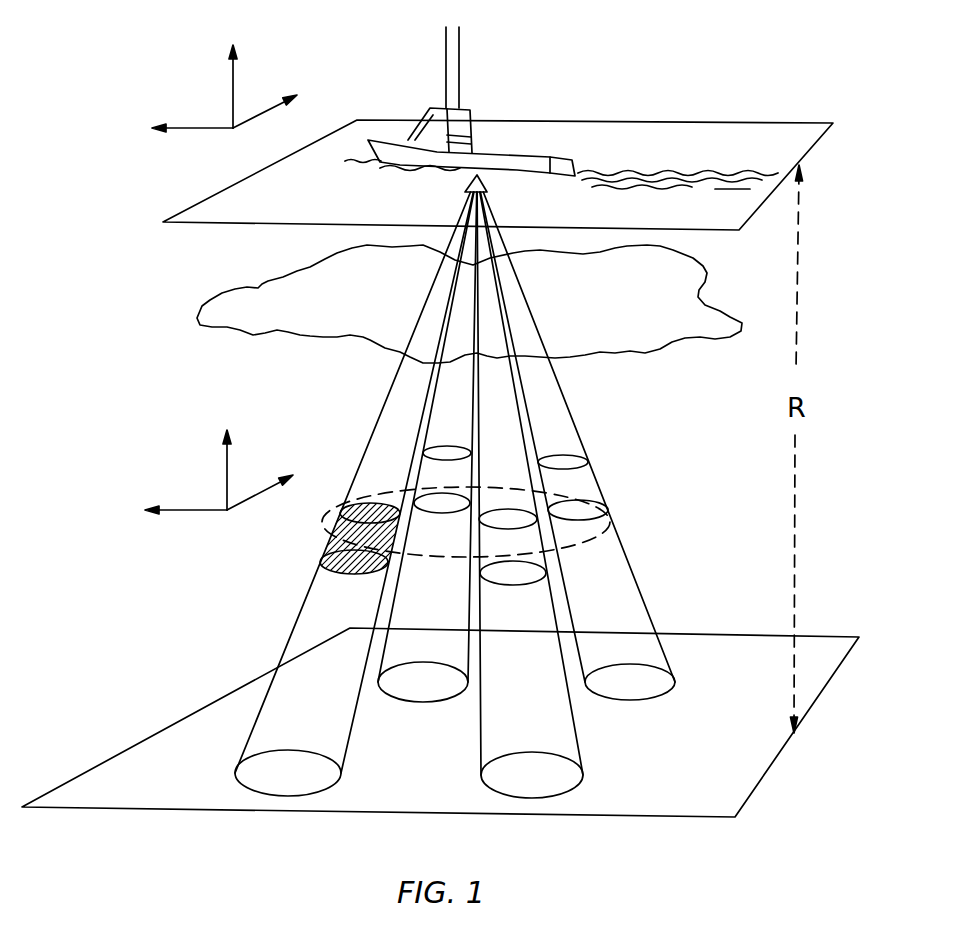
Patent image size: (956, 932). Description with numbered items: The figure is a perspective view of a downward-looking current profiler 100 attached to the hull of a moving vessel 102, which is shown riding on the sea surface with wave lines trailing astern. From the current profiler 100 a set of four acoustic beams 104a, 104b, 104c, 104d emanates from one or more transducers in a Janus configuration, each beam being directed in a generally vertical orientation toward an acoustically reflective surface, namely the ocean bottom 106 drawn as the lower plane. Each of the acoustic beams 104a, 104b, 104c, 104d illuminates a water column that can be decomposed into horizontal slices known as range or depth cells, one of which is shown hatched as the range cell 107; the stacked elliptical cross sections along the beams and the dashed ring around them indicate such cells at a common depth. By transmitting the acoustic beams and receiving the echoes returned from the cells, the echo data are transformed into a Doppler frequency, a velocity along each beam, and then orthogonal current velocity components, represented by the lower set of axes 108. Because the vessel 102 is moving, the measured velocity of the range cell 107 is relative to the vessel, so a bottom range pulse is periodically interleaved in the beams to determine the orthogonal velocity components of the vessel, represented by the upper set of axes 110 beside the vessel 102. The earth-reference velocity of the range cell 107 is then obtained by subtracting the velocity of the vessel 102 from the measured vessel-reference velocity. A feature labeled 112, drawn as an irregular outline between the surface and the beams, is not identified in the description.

The current profiler 100 is at (484, 174).
The vessel 102 is at (465, 110).
The acoustic beam 104a is at (284, 650).
The acoustic beam 104b is at (553, 610).
The acoustic beam 104c is at (650, 618).
The acoustic beam 104d is at (390, 605).
The ocean bottom 106 is at (812, 636).
The range cell 107 is at (332, 533).
The orthogonal current velocity components 108 is at (183, 451).
The orthogonal velocity components of the vessel 110 is at (188, 68).
The target cloud 112 is at (258, 288).